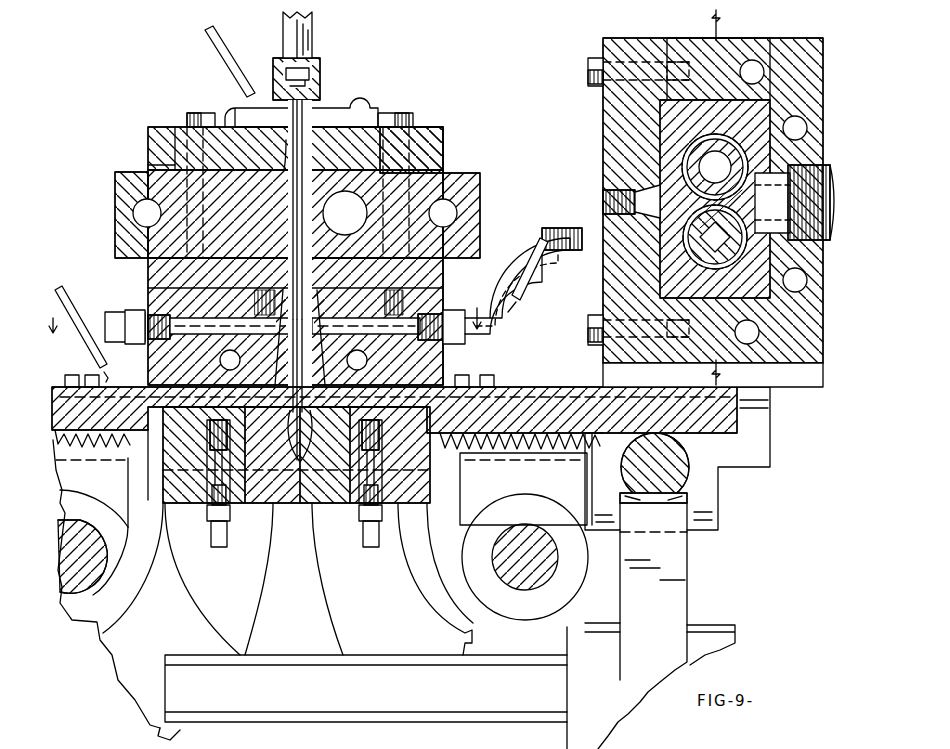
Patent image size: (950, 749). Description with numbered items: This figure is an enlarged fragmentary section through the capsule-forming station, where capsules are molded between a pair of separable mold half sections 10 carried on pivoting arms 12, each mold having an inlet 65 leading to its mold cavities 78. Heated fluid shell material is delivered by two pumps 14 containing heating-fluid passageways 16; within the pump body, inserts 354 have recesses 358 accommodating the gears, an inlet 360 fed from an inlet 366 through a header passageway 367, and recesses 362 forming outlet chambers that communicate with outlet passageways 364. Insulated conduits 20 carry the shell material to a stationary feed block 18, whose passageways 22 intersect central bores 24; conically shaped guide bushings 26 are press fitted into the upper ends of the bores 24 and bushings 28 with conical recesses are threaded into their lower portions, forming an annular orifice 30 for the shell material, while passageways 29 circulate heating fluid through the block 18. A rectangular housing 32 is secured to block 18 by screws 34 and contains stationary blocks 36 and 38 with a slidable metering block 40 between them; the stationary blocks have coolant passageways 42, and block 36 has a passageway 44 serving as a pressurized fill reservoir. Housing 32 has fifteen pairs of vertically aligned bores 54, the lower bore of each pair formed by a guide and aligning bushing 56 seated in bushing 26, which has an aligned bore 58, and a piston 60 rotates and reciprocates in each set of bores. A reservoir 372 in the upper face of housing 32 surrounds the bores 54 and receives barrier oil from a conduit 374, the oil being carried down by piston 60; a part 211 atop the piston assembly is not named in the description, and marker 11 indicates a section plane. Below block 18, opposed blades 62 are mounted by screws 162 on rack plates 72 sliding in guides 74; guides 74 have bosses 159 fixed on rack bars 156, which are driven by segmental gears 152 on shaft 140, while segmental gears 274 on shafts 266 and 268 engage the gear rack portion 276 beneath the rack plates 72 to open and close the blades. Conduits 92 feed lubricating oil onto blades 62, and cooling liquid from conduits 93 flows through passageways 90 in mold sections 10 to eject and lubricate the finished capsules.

The separable half sections 10 is at (240, 497).
The section line 11 is at (728, 198).
The pivoting arms 12 is at (222, 614).
The pumps 14 is at (636, 22).
The passageways 16 is at (800, 118).
The stationary feed block 18 is at (447, 290).
The insulated conduits 20 is at (125, 318).
The passageways 22 is at (175, 336).
The central bores 24 is at (322, 316).
The conically shaped guide bushings 26 is at (320, 290).
The bushings 28 is at (312, 344).
The passageways 29 is at (220, 364).
The annular orifice 30 is at (312, 370).
The rectangular housing 32 is at (430, 130).
The screws 34 is at (190, 113).
The stationary block 36 is at (455, 175).
The stationary block 38 is at (125, 172).
The slidable metering block 40 is at (232, 172).
The internal passageways 42 is at (134, 206).
The passageway 44 is at (348, 204).
The bores 54 is at (290, 155).
The guide and aligning bushing 56 is at (318, 266).
The bores 58 is at (266, 306).
The piston 60 is at (305, 152).
The blades 62 is at (170, 402).
The inlet 65 is at (394, 408).
The rack plates 72 is at (650, 380).
The guides 74 is at (772, 420).
The mold cavities 78 is at (282, 452).
The passageways 90 is at (276, 281).
The conduits 92 is at (70, 290).
The conduits 93 is at (226, 545).
The shaft 140 is at (420, 689).
The segmental gears 152 is at (687, 558).
The rack bars 156 is at (682, 452).
The bosses 159 is at (700, 497).
The screws 162 is at (494, 382).
The cap 211 is at (320, 78).
The shaft 266 is at (520, 530).
The second shaft 268 is at (70, 530).
The segmental gears 274 is at (123, 483).
The gear rack portion 276 is at (600, 445).
The inserts 354 is at (660, 110).
The recesses 358 is at (740, 270).
The inlet 360 is at (770, 244).
The recesses 362 is at (665, 180).
The outlet passageways 364 is at (633, 222).
The inlet 366 is at (815, 168).
The header passageway 367 is at (765, 258).
The reservoir 372 is at (338, 113).
The conduit 374 is at (226, 42).